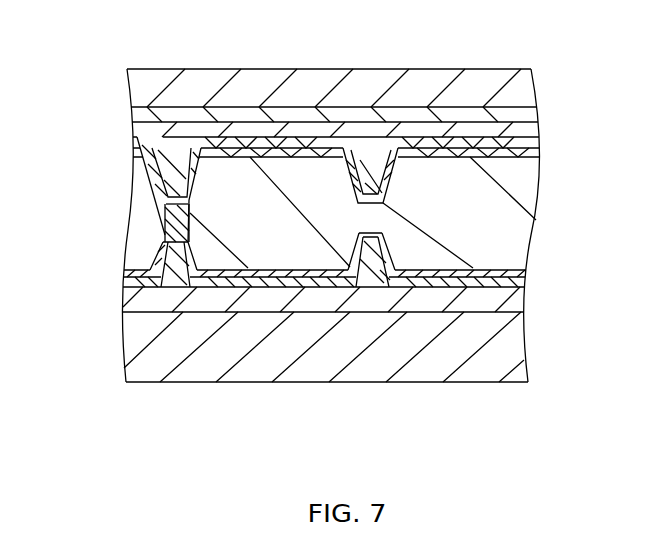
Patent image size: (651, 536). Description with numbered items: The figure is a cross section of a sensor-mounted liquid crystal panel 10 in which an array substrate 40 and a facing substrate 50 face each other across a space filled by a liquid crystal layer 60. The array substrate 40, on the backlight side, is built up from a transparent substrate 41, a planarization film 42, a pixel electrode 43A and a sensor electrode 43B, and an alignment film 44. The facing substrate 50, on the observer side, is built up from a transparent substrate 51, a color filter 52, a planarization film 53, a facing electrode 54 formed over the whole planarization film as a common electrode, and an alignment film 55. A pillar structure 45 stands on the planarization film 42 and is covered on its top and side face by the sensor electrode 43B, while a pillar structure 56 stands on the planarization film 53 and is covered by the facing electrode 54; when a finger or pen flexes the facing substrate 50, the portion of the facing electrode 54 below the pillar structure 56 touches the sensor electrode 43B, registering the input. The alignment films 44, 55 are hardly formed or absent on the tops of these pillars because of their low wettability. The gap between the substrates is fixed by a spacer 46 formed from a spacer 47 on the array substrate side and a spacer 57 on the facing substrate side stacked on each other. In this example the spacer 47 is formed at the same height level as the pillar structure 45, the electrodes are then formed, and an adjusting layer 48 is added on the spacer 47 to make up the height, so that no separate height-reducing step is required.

The liquid crystal panel 10 is at (533, 44).
The array substrate 40 is at (606, 245).
The transparent substrate 41 is at (508, 337).
The planarization film 42 is at (521, 306).
The pixel electrode 43A is at (518, 282).
The sensor electrode 43B is at (293, 284).
The alignment film 44 is at (500, 273).
The pillar structure 45 is at (369, 262).
The spacer 46 is at (70, 163).
The spacer 47 is at (172, 252).
The adjusting layer 48 is at (167, 211).
The facing substrate 50 is at (606, 77).
The transparent substrate 51 is at (522, 87).
The color filter 52 is at (526, 113).
The planarization film 53 is at (538, 133).
The facing electrode 54 is at (539, 155).
The alignment film 55 is at (538, 186).
The pillar structure 56 is at (382, 146).
The spacer 57 is at (172, 173).
The liquid crystal layer 60 is at (532, 222).